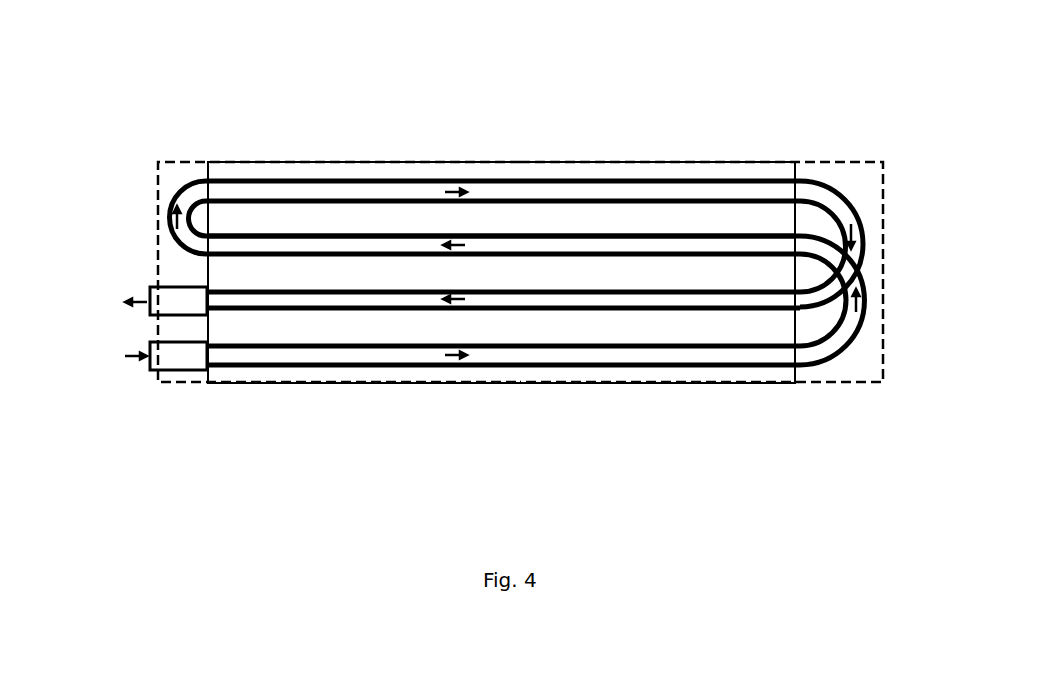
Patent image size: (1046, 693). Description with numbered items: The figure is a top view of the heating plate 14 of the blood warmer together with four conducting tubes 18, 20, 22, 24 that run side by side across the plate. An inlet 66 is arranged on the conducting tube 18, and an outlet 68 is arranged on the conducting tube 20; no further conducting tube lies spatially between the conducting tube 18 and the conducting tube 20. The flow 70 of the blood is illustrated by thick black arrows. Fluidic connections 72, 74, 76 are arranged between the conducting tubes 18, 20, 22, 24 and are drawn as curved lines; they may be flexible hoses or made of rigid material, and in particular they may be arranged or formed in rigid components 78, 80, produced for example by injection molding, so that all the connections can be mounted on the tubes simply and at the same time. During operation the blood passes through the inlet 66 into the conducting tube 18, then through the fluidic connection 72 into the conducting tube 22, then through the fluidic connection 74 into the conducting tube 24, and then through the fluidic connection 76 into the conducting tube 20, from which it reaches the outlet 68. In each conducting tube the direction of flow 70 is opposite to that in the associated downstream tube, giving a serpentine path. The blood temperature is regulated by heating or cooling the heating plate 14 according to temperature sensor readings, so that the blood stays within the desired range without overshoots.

The heating plate 14 is at (822, 89).
The conducting tube 18 is at (325, 352).
The conducting tube 20 is at (425, 300).
The conducting tube 22 is at (317, 250).
The conducting tube 24 is at (375, 190).
The inlet 66 is at (163, 357).
The outlet 68 is at (173, 302).
The flow 70 is at (135, 367).
The fluidic connection 72 is at (870, 300).
The fluidic connection 74 is at (166, 205).
The fluidic connection 76 is at (873, 226).
The rigid component 78 is at (866, 145).
The rigid component 80 is at (184, 150).